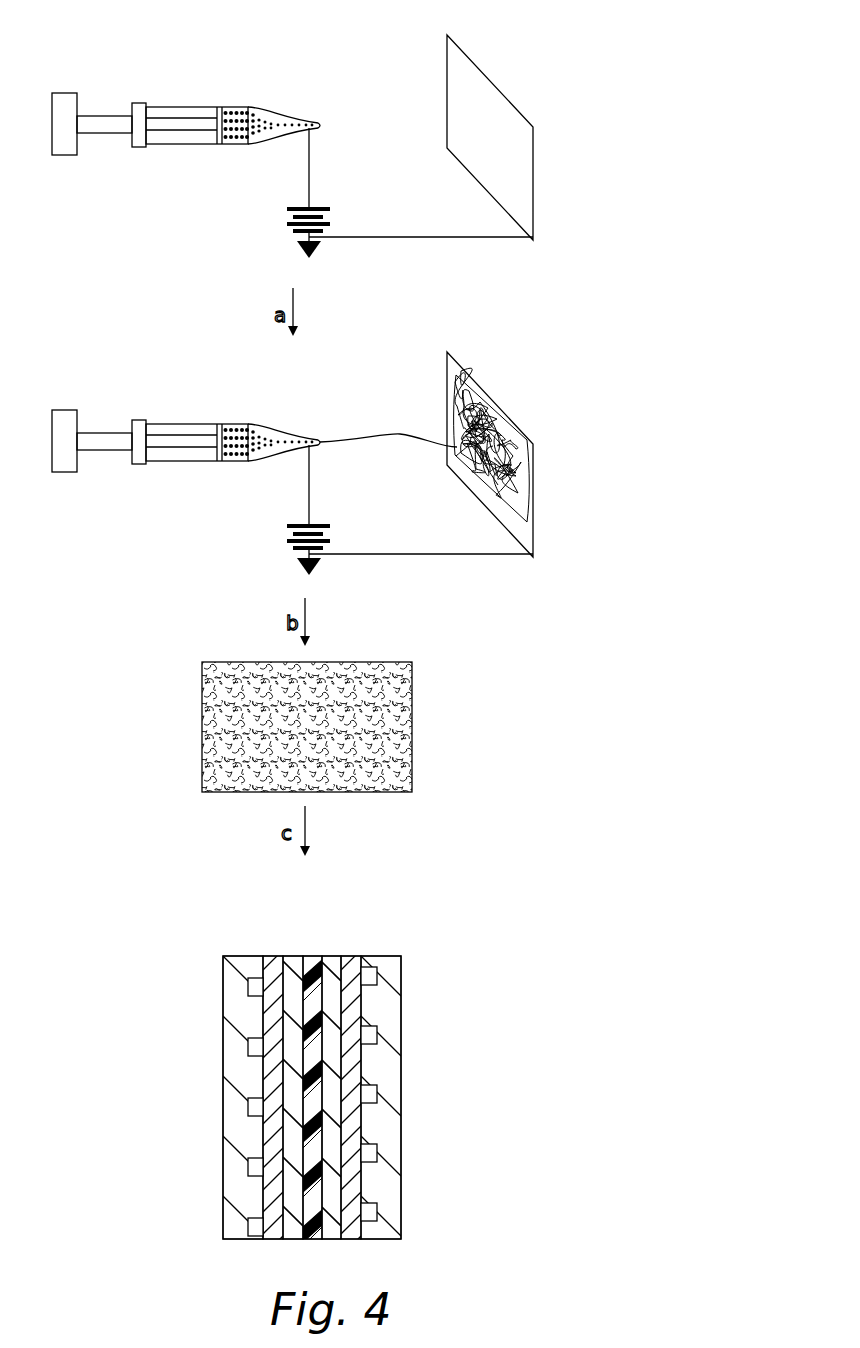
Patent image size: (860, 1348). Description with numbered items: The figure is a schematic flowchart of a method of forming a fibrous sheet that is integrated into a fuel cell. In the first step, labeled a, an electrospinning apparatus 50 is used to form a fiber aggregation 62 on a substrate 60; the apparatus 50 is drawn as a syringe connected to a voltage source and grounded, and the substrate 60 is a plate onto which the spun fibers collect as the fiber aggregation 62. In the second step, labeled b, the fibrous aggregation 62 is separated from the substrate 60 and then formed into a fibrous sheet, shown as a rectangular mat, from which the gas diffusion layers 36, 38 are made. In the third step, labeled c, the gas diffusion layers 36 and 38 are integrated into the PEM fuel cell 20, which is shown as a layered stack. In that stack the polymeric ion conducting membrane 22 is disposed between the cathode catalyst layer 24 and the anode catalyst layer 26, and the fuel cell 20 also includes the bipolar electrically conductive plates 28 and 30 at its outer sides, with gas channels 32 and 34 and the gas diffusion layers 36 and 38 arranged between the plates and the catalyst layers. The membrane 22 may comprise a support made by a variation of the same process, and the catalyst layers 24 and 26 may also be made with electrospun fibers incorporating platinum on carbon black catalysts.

The PEM fuel cell 20 is at (178, 954).
The polymeric ion conducting membrane 22 is at (313, 956).
The cathode catalyst layer 24 is at (293, 957).
The anode catalyst layer 26 is at (330, 956).
The bipolar electrically conductive plate 28 is at (243, 962).
The bipolar electrically conductive plate 30 is at (375, 956).
The gas channel 32 is at (248, 985).
The gas channel 34 is at (377, 972).
The gas diffusion layer 36 is at (407, 690).
The gas diffusion layer 38 is at (350, 956).
The electrospinning apparatus 50 is at (133, 52).
The substrate 60 is at (453, 80).
The fiber aggregation 62 is at (476, 396).